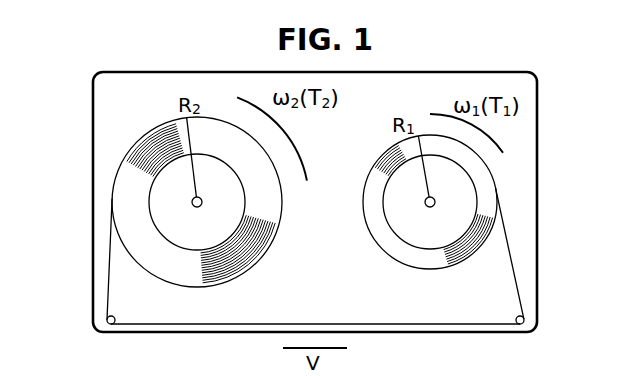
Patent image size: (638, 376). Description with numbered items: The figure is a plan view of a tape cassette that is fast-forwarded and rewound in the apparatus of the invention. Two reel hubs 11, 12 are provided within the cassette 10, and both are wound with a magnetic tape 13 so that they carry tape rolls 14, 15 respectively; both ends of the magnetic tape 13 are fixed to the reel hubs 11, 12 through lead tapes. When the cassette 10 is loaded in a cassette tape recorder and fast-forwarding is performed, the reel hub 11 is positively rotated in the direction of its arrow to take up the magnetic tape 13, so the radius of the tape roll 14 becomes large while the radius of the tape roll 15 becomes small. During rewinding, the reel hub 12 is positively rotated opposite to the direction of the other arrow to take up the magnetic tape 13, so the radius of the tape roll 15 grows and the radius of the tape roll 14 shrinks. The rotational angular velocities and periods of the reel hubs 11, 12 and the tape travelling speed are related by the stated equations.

The cassette 10 is at (116, 72).
The reel hub 11 is at (414, 220).
The reel hub 12 is at (217, 217).
The magnetic tape 13 is at (398, 324).
The tape roll 14 is at (430, 269).
The tape roll 15 is at (176, 277).